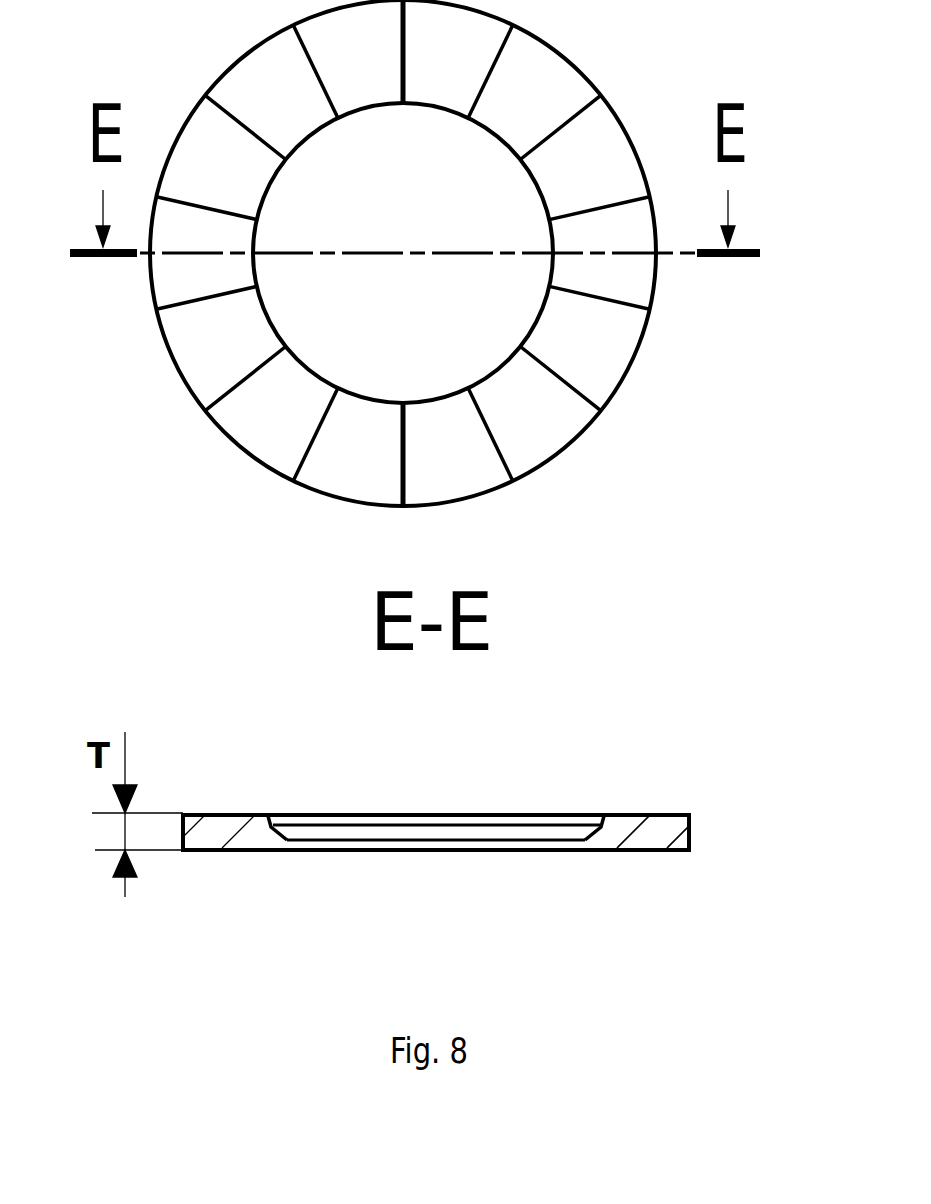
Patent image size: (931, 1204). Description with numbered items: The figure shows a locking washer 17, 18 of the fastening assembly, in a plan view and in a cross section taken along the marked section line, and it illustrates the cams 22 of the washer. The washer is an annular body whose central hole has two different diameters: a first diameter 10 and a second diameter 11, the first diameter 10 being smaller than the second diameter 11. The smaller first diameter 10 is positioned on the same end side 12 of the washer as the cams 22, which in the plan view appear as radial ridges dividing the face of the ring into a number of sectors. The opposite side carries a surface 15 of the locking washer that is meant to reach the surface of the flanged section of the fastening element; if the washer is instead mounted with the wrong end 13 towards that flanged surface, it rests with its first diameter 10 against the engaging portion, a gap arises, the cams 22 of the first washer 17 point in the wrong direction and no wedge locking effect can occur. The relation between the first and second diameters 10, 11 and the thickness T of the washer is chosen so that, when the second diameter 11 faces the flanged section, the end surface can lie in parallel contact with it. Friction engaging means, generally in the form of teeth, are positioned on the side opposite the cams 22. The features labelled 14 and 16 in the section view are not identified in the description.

The first diameter 10 is at (283, 840).
The second diameter 11 is at (270, 814).
The end side 12 is at (511, 754).
The wrong end 13 is at (501, 910).
The transition region 14 is at (292, 814).
The surface of the locking washer 15 is at (553, 433).
The outer edge 16 is at (250, 815).
The first locking washer 17 is at (639, 762).
The second locking washer 18 is at (639, 762).
The cams 22 is at (268, 445).